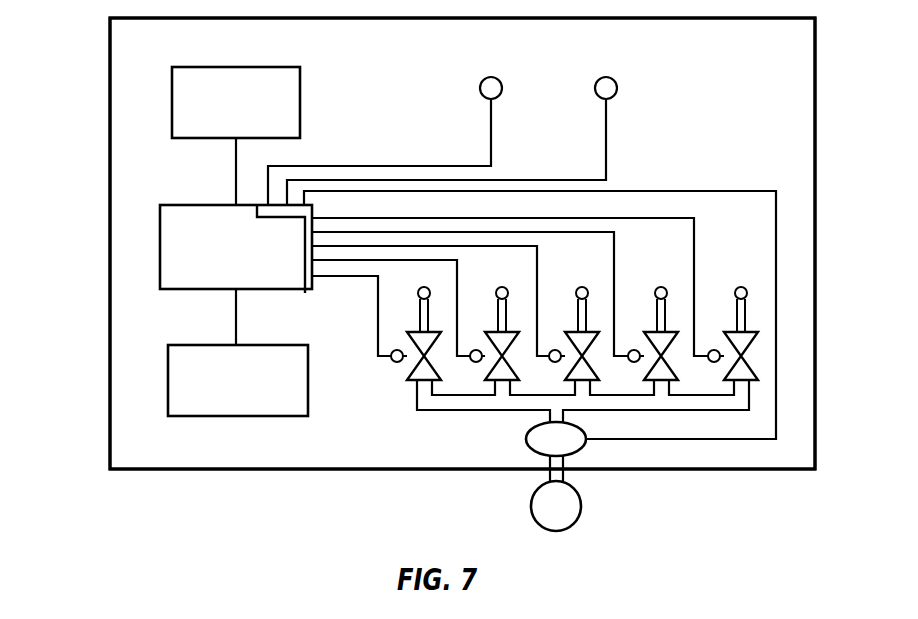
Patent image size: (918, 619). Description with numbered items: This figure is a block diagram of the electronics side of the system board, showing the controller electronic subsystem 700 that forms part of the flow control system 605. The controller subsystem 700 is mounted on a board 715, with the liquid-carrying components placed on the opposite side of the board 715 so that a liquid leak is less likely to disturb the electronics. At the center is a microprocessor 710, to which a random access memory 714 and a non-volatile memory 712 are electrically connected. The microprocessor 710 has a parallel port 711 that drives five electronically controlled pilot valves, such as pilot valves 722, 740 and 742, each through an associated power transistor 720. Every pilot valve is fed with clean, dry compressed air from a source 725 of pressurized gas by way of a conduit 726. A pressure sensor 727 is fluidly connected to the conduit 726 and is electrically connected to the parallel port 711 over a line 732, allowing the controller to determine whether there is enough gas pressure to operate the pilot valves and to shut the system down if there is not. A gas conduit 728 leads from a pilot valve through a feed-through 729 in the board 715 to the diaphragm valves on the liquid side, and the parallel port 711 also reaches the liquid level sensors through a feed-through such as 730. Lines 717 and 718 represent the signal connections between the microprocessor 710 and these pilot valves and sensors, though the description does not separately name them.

The flow control system 605 is at (88, 482).
The controller electronic subsystem 700 is at (285, 507).
The microprocessor 710 is at (185, 290).
The parallel port 711 is at (308, 290).
The non-volatile memory 712 is at (195, 418).
The random access memory (RAM) 714 is at (192, 140).
The board 715 is at (175, 470).
The valve control lines 717 is at (377, 300).
The sensor input lines 718 is at (348, 165).
The power transistor 720 is at (393, 363).
The pilot valve 722 is at (416, 385).
The source of pressurized gas 725 is at (581, 507).
The conduit 726 is at (467, 412).
The pressure sensor 727 is at (528, 445).
The gas conduit 728 is at (417, 314).
The feed-through 729 is at (417, 293).
The feed-through 730 is at (498, 77).
The line 732 is at (692, 190).
The pilot valve 740 is at (506, 317).
The pilot valve 742 is at (496, 293).